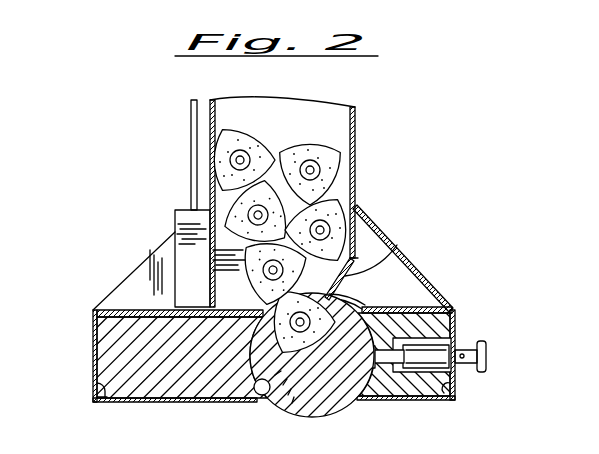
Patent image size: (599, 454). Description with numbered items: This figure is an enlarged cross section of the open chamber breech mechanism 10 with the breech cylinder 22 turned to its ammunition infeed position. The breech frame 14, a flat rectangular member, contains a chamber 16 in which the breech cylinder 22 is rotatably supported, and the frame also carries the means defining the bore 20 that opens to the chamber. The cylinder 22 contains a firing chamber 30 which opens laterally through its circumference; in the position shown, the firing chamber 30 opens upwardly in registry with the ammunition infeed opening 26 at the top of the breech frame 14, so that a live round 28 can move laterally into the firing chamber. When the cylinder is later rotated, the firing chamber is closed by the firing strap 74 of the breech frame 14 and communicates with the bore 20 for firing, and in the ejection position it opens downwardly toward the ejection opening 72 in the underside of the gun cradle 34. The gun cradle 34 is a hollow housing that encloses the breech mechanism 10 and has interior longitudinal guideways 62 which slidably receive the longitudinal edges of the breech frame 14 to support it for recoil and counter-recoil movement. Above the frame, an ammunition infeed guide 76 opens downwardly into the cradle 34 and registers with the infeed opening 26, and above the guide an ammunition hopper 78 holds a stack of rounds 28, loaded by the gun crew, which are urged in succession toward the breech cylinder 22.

The breech mechanism 10 is at (243, 376).
The breech frame 14 is at (188, 372).
The chamber 16 is at (268, 392).
The bore 20 is at (288, 414).
The breech cylinder 22 is at (350, 410).
The ammunition infeed opening 26 is at (440, 306).
The rounds 28 is at (260, 142).
The firing chamber 30 is at (326, 311).
The gun cradle 34 is at (418, 273).
The guideways 62 is at (100, 386).
The ejection opening 72 is at (118, 402).
The firing strap 74 is at (115, 337).
The ammunition infeed guide 76 is at (389, 250).
The ammunition hopper 78 is at (356, 160).